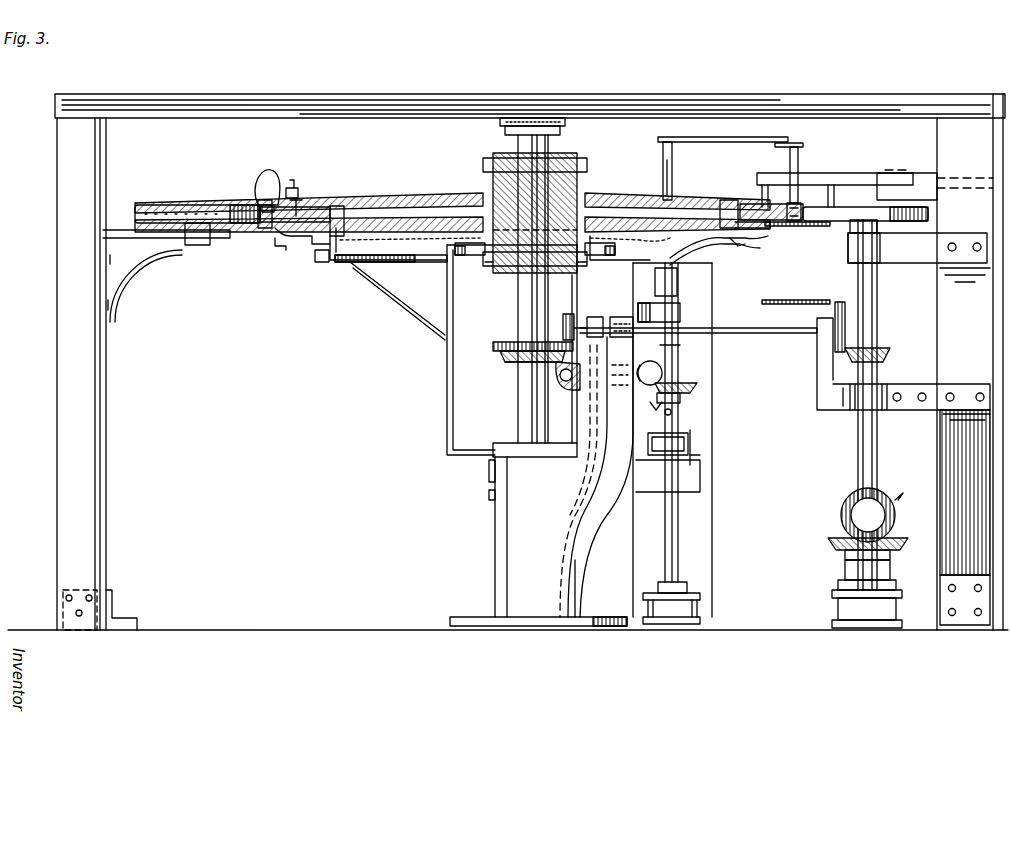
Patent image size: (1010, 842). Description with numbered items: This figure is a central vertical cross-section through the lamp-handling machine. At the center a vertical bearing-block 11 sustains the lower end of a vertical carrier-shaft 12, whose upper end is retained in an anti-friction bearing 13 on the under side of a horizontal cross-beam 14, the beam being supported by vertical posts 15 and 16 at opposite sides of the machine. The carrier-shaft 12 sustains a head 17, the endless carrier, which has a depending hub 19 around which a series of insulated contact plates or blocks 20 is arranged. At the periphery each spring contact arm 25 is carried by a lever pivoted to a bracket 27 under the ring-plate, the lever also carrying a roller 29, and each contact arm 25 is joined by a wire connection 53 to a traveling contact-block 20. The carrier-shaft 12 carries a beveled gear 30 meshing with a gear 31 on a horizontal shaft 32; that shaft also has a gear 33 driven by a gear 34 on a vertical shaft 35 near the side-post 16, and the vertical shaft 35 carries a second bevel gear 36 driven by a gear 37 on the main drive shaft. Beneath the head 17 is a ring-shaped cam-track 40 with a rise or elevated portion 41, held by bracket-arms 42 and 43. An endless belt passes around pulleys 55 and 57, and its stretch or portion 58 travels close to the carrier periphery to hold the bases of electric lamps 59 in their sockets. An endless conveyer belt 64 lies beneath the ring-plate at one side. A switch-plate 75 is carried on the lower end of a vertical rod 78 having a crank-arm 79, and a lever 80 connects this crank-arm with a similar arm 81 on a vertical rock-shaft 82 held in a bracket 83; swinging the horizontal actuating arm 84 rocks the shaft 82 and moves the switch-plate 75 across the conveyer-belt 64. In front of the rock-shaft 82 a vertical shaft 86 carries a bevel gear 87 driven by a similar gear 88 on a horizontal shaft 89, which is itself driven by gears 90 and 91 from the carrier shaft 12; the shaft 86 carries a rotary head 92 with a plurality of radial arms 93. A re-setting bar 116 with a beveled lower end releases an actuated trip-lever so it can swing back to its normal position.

The vertical bearing-block 11 is at (495, 536).
The vertical carrier-shaft 12 is at (512, 406).
The anti-friction bearing 13 is at (500, 124).
The horizontal cross-beam 14 is at (592, 100).
The vertical post 15 is at (108, 372).
The vertical post 16 is at (965, 446).
The head 17 is at (424, 197).
The depending hub 19 is at (490, 280).
The contact plates or blocks 20 is at (480, 260).
The spring contact arm 25 is at (282, 240).
The bracket 27 is at (765, 238).
The roller 29 is at (314, 262).
The beveled gear 30 is at (496, 343).
The gear 31 is at (569, 312).
The horizontal shaft 32 is at (698, 318).
The gear 33 is at (838, 303).
The gear 34 is at (878, 350).
The vertical shaft 35 is at (877, 294).
The second bevel gear 36 is at (830, 543).
The gear 37 is at (842, 505).
The cam-track 40 is at (412, 263).
The rise or elevated portion 41 is at (735, 246).
The bracket-arm 42 is at (447, 401).
The bracket-arm 43 is at (410, 303).
The wire connection 53 is at (418, 238).
The pulley 55 is at (848, 210).
The pulley 57 is at (165, 206).
The stretch or portion of endless belt 58 is at (250, 228).
The electric lamp 59 is at (264, 172).
The endless conveyer belt 64 is at (815, 228).
The switch-plate 75 is at (802, 205).
The vertical rod 78 is at (790, 160).
The crank-arm 79 is at (800, 145).
The lever 80 is at (723, 129).
The arm 81 is at (653, 177).
The vertical rock-shaft 82 is at (673, 172).
The bracket 83 is at (672, 347).
The actuating arm 84 is at (657, 413).
The vertical shaft 86 is at (685, 517).
The bevel gear 87 is at (700, 390).
The gear 88 is at (690, 368).
The horizontal shaft 89 is at (640, 380).
The gear 90 is at (560, 390).
The gear 91 is at (510, 362).
The rotary head 92 is at (695, 480).
The radial arm 93 is at (732, 457).
The re-setting bar 116 is at (592, 318).